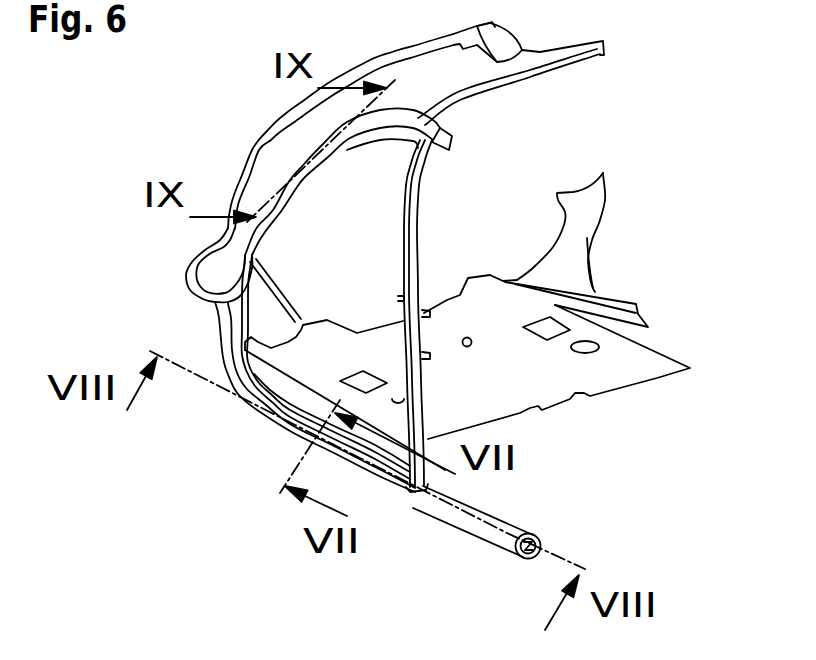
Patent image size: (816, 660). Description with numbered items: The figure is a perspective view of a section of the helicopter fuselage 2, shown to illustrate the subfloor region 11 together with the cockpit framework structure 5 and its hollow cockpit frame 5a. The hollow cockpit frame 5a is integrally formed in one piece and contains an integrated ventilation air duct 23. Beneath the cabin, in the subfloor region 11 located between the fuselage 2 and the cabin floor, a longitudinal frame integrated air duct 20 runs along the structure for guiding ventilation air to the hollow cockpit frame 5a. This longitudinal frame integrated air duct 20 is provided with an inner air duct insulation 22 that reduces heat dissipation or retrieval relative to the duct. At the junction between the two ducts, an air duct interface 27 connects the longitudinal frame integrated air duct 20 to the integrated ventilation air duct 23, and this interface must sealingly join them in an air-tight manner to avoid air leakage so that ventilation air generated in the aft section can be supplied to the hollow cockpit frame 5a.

The fuselage 2 is at (559, 82).
The cockpit framework structure 5 is at (178, 244).
The hollow cockpit frame 5a is at (284, 152).
The subfloor region 11 is at (582, 425).
The longitudinal frame integrated air duct 20 is at (510, 527).
The inner air duct insulation 22 is at (537, 538).
The integrated ventilation air duct 23 is at (621, 46).
The air duct interface 27 is at (426, 506).